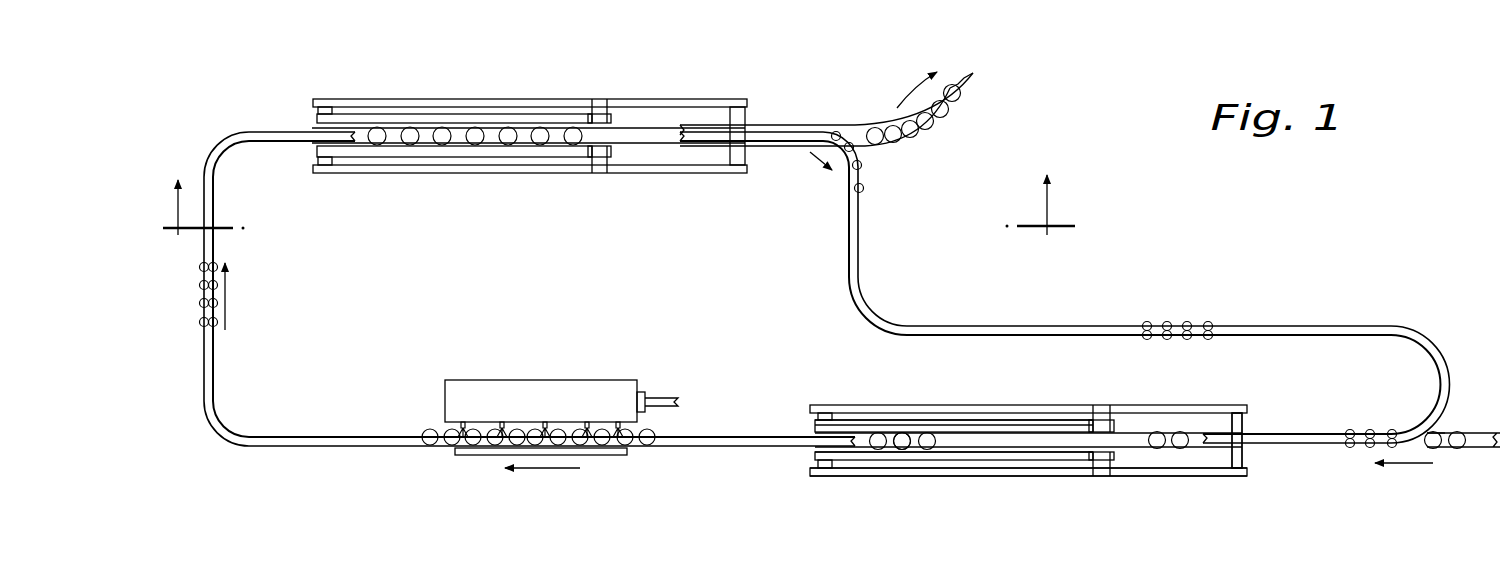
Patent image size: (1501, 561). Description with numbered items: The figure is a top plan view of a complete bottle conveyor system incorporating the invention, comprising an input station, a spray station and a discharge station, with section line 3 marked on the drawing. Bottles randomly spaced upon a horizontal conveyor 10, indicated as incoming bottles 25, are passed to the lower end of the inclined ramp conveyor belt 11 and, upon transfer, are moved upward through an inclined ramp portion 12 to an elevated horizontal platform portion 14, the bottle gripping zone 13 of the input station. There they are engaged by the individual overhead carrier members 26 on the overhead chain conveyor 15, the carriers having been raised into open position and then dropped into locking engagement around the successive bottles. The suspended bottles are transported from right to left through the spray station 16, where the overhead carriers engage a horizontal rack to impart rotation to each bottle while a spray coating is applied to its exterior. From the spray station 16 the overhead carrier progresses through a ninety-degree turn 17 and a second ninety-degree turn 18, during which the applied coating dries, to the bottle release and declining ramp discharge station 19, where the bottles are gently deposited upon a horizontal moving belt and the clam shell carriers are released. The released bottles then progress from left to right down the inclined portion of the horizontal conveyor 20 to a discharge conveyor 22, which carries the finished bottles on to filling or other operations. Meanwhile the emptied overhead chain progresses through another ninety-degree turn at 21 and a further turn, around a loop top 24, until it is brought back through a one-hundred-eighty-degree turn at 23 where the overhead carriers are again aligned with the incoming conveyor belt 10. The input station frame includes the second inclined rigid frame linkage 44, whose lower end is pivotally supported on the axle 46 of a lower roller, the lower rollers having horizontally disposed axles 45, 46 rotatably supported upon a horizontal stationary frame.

The section line 3- 3 is at (619, 195).
The horizontal conveyor 10 is at (1445, 450).
The inclined ramp conveyor belt 11 is at (1195, 447).
The inclined ramp portion 12 is at (957, 396).
The bottle gripping zone 13 is at (910, 455).
The horizontal platform portion 14 is at (805, 396).
The overhead chain conveyor 15 is at (1441, 352).
The spray station 16 is at (644, 362).
The 90° turn 17 is at (236, 445).
The second 90° turn 18 is at (240, 126).
The bottle release and declining ramp discharge station 19 is at (622, 176).
The horizontal conveyor 20 is at (738, 92).
The 90° turn 21 is at (836, 186).
The discharge conveyor 22 is at (848, 124).
The 180° turn 23 is at (883, 305).
The loop top 24 is at (1432, 322).
The incoming bottles 25 is at (1461, 426).
The overhead carrier members 26 is at (858, 193).
The second inclined rigid frame linkage 44 is at (982, 424).
The axle 45 is at (1248, 462).
The axle 46 is at (1112, 467).